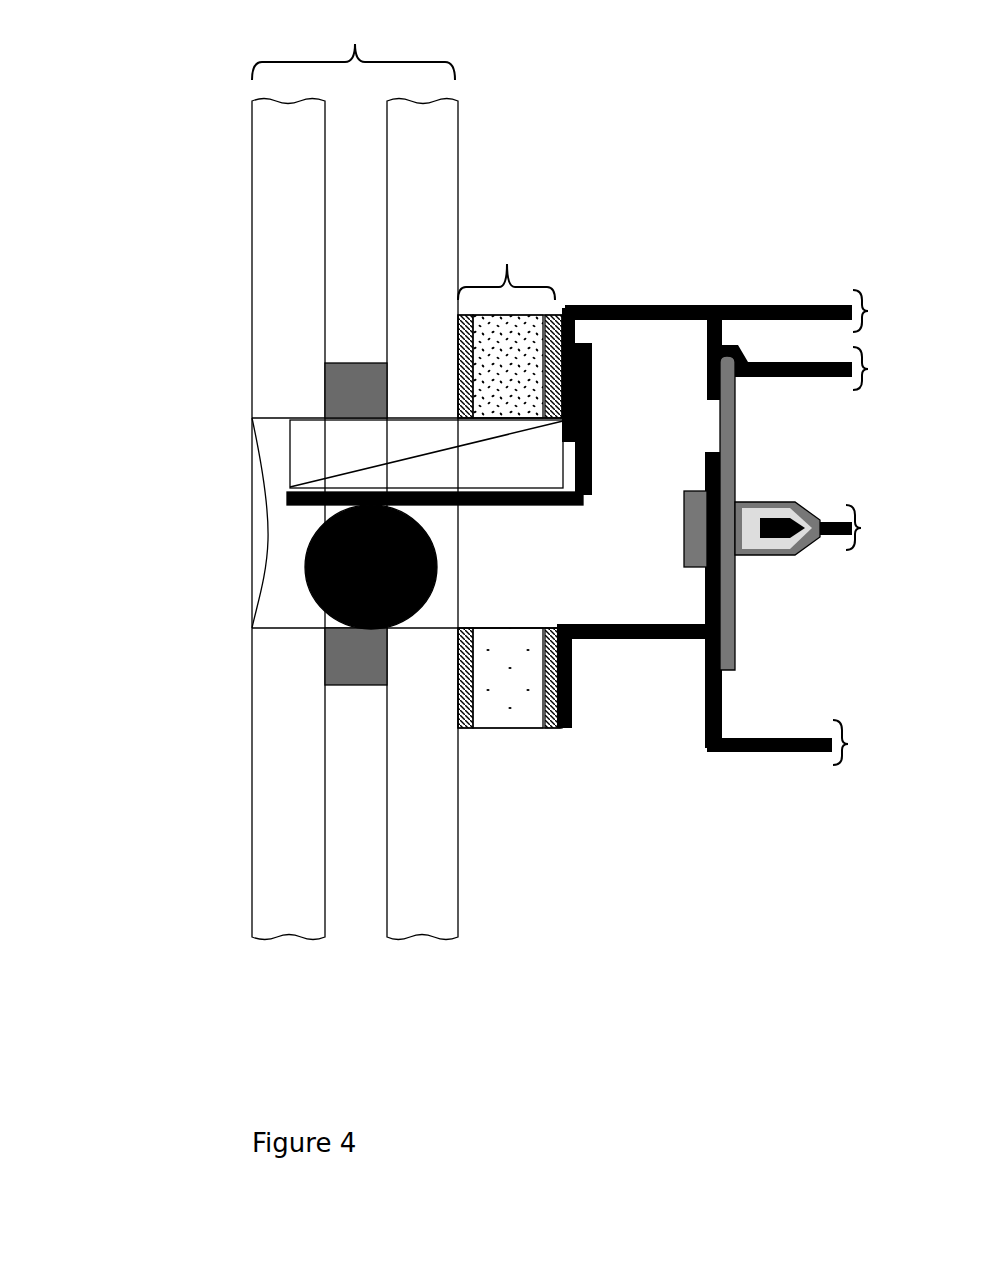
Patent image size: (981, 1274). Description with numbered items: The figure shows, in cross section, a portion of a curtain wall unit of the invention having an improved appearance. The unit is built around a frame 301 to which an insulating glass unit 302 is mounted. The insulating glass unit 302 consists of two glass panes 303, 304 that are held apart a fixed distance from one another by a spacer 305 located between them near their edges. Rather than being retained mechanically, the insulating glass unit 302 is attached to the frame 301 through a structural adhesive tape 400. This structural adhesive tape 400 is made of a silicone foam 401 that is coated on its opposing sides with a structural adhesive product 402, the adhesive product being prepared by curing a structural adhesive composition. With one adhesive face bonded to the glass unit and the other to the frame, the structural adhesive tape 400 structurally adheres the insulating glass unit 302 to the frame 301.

The frame 301 is at (768, 757).
The insulating glass unit 302 is at (353, 43).
The glass pane 303 is at (288, 519).
The glass pane 304 is at (422, 519).
The spacer 305 is at (338, 390).
The structural adhesive tape 400 is at (510, 478).
The silicone foam 401 is at (510, 727).
The structural adhesive product 402 is at (550, 728).